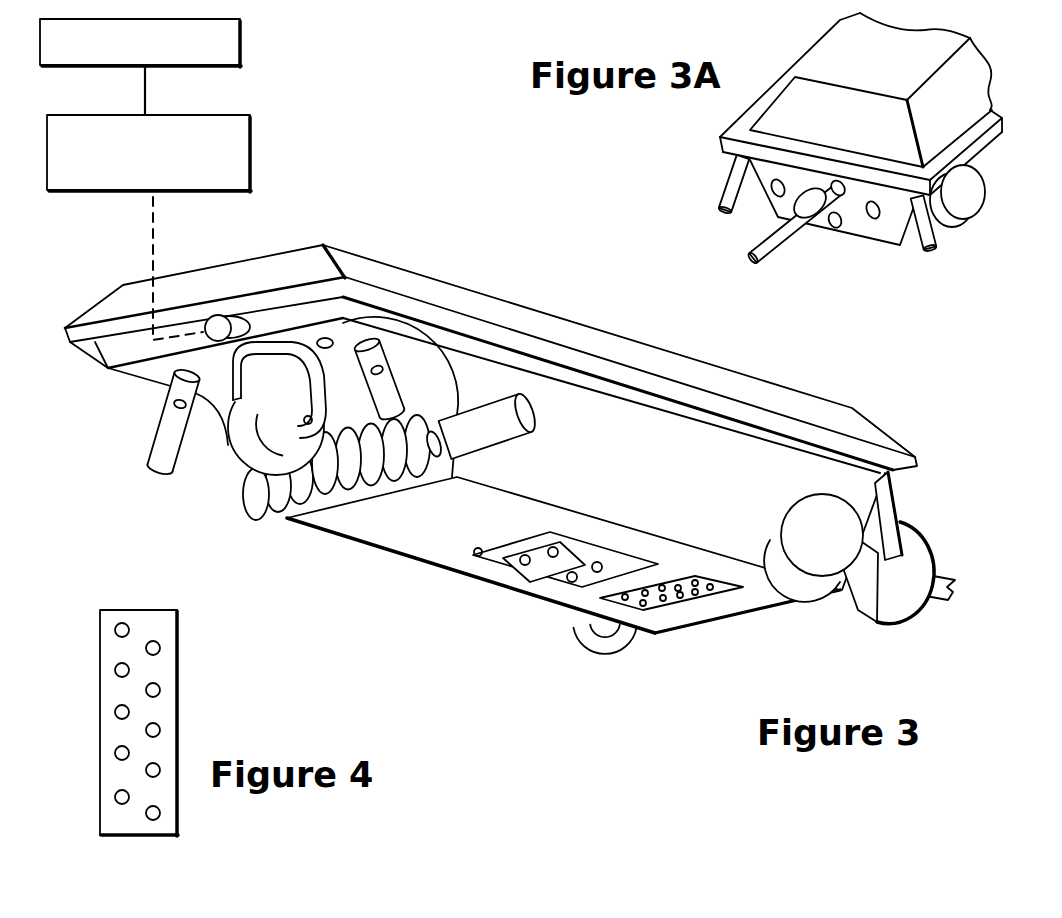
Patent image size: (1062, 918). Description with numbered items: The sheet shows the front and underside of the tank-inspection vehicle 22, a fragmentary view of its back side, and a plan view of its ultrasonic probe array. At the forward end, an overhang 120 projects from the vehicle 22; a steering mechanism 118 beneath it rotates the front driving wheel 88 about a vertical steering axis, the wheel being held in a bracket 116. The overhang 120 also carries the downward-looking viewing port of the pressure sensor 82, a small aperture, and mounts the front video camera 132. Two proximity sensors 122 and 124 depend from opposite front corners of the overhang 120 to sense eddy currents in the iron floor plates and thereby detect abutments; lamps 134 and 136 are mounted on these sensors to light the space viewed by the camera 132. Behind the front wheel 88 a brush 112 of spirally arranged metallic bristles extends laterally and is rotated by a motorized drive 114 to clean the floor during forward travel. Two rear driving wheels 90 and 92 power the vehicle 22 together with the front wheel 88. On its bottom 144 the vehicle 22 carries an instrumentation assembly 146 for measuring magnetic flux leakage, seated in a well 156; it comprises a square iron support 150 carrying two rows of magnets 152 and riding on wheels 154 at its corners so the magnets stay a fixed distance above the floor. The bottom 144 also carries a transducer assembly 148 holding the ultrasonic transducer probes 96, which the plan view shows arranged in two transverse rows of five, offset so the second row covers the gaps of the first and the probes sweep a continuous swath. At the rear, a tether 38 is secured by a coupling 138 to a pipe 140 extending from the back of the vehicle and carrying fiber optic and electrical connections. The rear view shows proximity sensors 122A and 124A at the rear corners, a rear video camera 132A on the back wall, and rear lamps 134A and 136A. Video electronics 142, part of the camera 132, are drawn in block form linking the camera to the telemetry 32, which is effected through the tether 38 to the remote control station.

In FIG. 3, the vehicle 22 is at (537, 302).
In FIG. 3, the telemetry link 32 is at (247, 48).
In FIG. 3, the tether 38 is at (950, 589).
In FIG. 3, the pressure sensor 82 is at (328, 338).
In FIG. 3, the front driving wheel 88 is at (235, 438).
In FIG. 3, the rear driving wheel 90 is at (797, 582).
In FIG. 3, the rear driving wheel 92 is at (604, 650).
In FIG. 3, the ultrasonic transducer probes 96 is at (685, 598).
In FIG. 4, the ultrasonic transducer probes 96 is at (160, 652).
In FIG. 3, the brush 112 is at (235, 513).
In FIG. 3, the motorized drive 114 is at (507, 433).
In FIG. 3, the bracket 116 is at (312, 420).
In FIG. 3, the steering mechanism 118 is at (296, 345).
In FIG. 3, the overhang 120 is at (135, 370).
In FIG. 3, the proximity sensor 122 is at (400, 387).
In FIG. 3, the proximity sensor 124 is at (150, 447).
In FIG. 3, the front video camera 132 is at (218, 320).
In FIG. 3, the lamp 134 is at (381, 357).
In FIG. 3, the lamp 136 is at (172, 409).
In FIG. 3, the coupling 138 is at (933, 539).
In FIG. 3, the pipe 140 is at (849, 580).
In FIG. 3, the video electronics 142 is at (253, 148).
In FIG. 3, the bottom 144 is at (358, 532).
In FIG. 3, the instrumentation assembly 146 is at (490, 568).
In FIG. 3, the transducer assembly 148 is at (675, 633).
In FIG. 4, the transducer assembly 148 is at (134, 723).
In FIG. 3, the iron support 150 is at (505, 582).
In FIG. 3, the magnets 152 is at (553, 557).
In FIG. 3, the wheels 154 is at (550, 548).
In FIG. 3, the well 156 is at (476, 550).
In FIG. 3, the proximity sensor 122A is at (896, 508).
In FIG. 3A, the proximity sensor 122A is at (725, 182).
In FIG. 3A, the proximity sensor 124A is at (937, 239).
In FIG. 3A, the rear video camera 132A is at (837, 228).
In FIG. 3A, the rear lamp 134A is at (773, 196).
In FIG. 3A, the rear lamp 136A is at (879, 219).